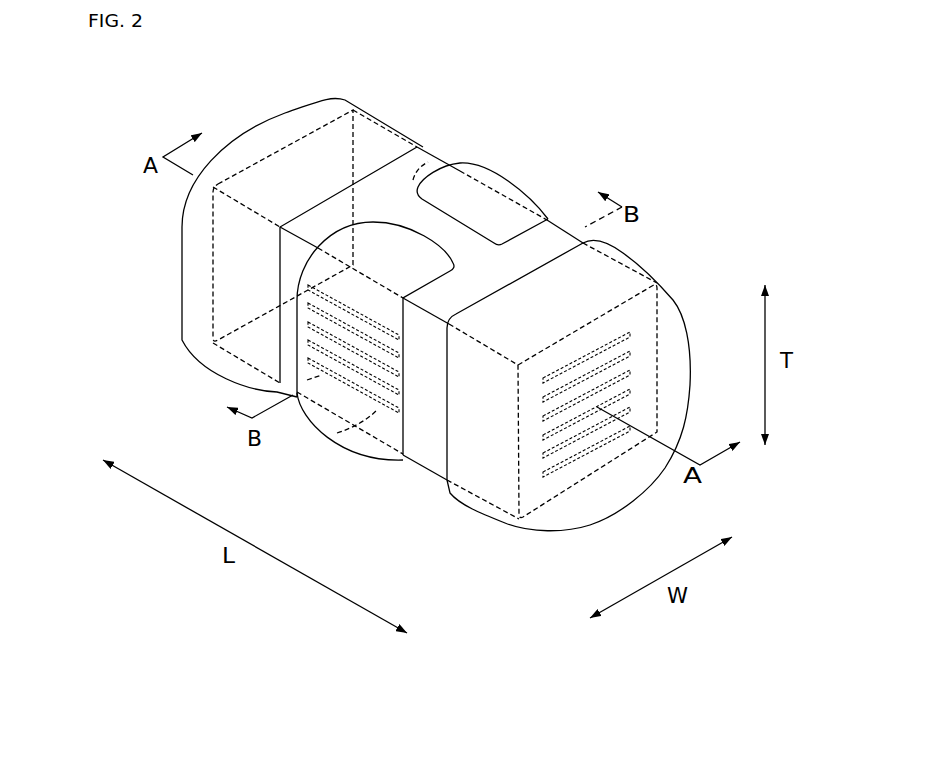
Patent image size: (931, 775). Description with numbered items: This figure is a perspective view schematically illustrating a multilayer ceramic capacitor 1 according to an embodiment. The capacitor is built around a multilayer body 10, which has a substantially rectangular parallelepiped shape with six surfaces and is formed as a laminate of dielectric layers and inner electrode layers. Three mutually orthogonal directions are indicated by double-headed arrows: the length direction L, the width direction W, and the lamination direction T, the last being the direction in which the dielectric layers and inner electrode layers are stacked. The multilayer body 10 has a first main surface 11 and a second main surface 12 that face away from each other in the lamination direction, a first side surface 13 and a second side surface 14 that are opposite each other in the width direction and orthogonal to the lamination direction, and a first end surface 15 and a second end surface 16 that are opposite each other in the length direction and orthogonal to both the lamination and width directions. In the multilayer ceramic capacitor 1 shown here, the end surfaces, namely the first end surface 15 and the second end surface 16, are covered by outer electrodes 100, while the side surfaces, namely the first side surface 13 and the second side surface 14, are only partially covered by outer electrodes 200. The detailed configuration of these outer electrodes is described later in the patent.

The multilayer ceramic capacitor 1 is at (662, 108).
The multilayer body 10 is at (432, 147).
The first main surface 11 is at (540, 236).
The second main surface 12 is at (325, 436).
The first side surface 13 is at (428, 450).
The second side surface 14 is at (420, 158).
The first end surface 15 is at (283, 168).
The second end surface 16 is at (620, 316).
The outer electrodes 100 is at (308, 112).
The outer electrodes 200 is at (500, 183).